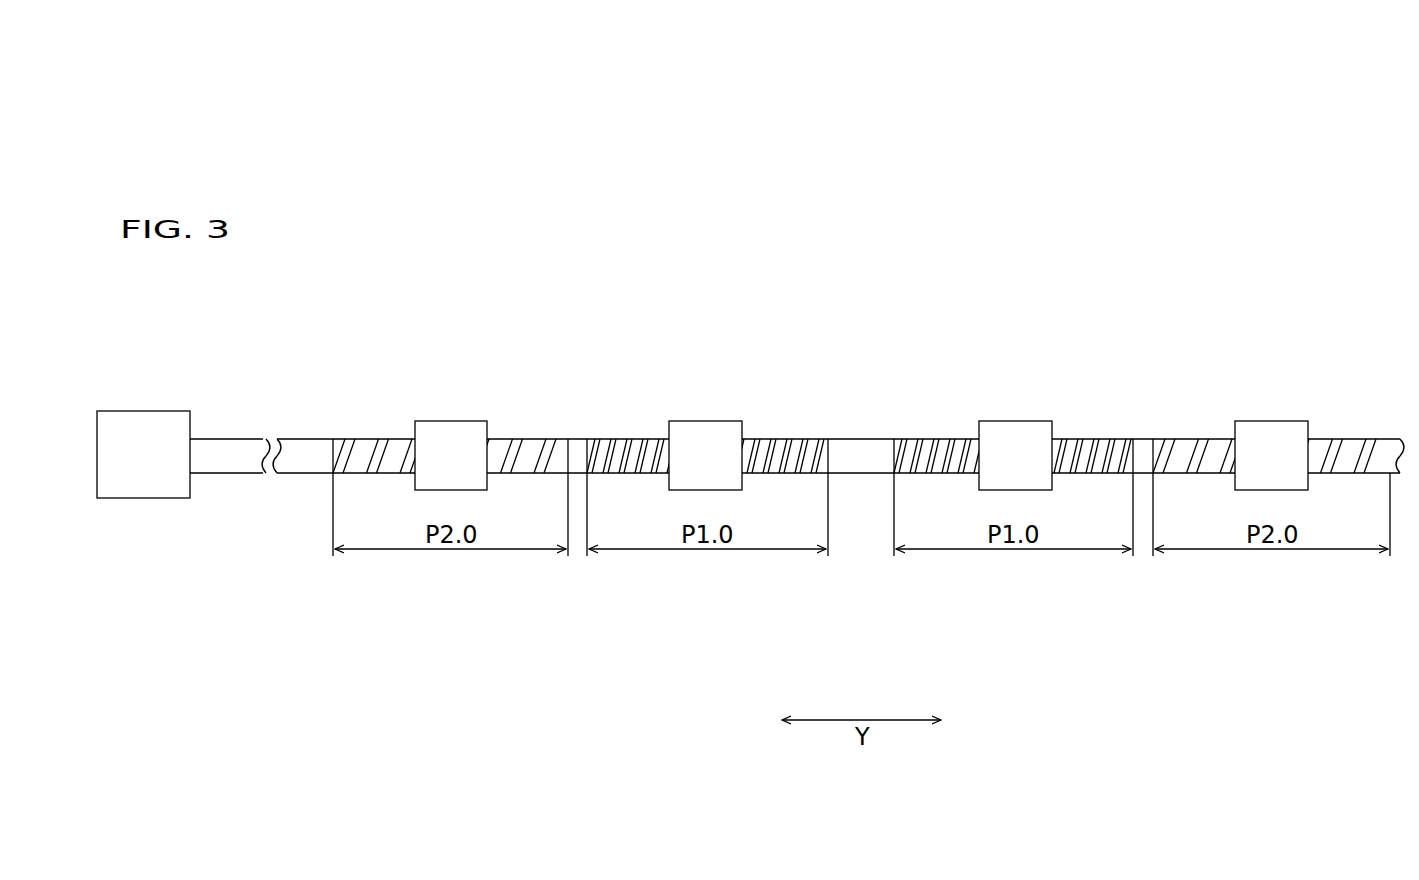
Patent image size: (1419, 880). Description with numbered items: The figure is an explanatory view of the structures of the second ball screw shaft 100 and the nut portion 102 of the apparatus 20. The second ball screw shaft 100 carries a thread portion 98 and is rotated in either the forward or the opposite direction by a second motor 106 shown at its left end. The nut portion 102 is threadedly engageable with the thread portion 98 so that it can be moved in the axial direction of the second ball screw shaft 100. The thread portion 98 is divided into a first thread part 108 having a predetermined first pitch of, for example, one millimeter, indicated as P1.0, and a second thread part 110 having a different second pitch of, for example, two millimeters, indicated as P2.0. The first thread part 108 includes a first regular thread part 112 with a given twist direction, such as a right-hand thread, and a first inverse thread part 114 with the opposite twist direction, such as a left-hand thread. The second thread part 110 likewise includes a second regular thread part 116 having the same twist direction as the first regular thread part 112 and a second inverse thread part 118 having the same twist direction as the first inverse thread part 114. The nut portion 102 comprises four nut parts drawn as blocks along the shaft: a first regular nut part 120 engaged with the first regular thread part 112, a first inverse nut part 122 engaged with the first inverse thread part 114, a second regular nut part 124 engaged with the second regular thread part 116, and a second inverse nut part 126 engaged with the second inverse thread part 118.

The lens driving unit 20 is at (1194, 254).
The thread portion 98 is at (868, 510).
The second ball screw shaft 100 is at (228, 452).
The nut portion 102 is at (861, 368).
The second motor 106 is at (148, 425).
The first thread part 108 is at (943, 388).
The second thread part 110 is at (868, 510).
The first regular thread part 112 is at (912, 440).
The first inverse thread part 114 is at (806, 440).
The second regular thread part 116 is at (1278, 531).
The second inverse thread part 118 is at (545, 470).
The first regular nut part 120 is at (1005, 421).
The first inverse nut part 122 is at (700, 421).
The second regular nut part 124 is at (1252, 401).
The second inverse nut part 126 is at (442, 421).